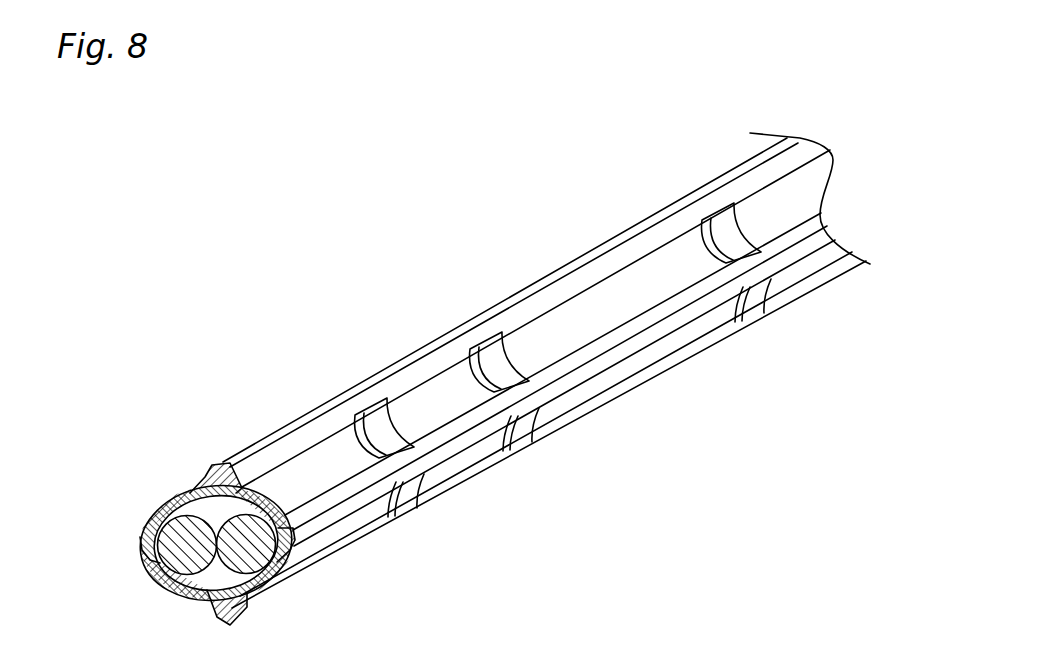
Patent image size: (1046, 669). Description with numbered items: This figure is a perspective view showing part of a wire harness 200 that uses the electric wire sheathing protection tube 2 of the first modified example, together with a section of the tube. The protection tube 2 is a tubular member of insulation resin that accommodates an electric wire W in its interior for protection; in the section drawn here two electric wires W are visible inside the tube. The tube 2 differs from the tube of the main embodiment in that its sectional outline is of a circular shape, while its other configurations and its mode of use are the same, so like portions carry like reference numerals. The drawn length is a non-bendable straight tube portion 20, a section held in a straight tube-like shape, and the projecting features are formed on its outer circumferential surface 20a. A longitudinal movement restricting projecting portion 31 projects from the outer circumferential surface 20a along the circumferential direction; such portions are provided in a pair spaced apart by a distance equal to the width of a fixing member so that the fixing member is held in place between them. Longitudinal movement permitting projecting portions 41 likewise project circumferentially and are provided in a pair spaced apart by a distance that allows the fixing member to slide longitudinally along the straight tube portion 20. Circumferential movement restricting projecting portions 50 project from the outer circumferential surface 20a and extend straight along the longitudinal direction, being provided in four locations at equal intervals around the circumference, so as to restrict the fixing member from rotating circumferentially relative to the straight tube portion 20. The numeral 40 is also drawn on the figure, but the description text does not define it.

The wire harness 200 is at (268, 307).
The electric wire sheathing protection tube 2 is at (409, 224).
The electric wire W is at (240, 521).
The circumferential movement restricting projecting portion 50 is at (138, 547).
The non-bendable straight tube portion 20 is at (472, 250).
The outer circumferential surface 20a is at (676, 284).
The band clip 40 is at (647, 270).
The longitudinal movement permitting projecting portion 41 is at (498, 338).
The longitudinal movement restricting projecting portion 31 is at (378, 415).